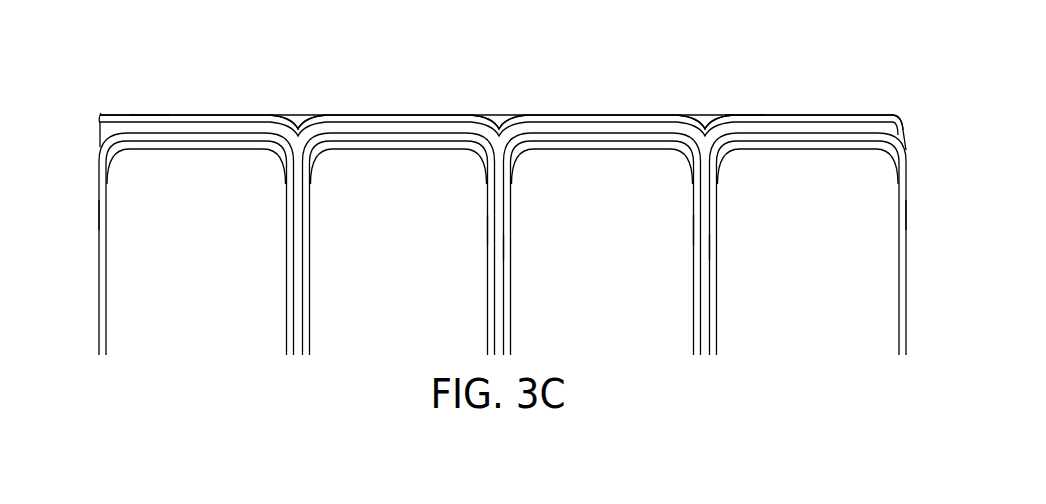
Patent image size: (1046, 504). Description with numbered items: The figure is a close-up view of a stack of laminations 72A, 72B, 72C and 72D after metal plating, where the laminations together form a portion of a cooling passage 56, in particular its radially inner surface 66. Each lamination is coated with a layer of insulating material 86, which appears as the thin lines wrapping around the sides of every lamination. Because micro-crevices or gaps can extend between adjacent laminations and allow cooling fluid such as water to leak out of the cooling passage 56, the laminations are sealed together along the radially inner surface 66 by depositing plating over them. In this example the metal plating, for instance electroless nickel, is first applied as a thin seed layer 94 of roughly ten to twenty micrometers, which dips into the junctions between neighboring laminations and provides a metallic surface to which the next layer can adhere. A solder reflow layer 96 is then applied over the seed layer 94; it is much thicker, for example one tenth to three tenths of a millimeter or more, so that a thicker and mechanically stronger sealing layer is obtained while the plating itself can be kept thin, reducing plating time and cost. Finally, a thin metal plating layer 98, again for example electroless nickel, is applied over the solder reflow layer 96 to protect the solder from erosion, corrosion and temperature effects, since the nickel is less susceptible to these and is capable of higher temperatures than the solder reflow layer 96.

The cooling passage 56 is at (483, 60).
The radially inner surface 66 is at (850, 70).
The lamination 72A is at (176, 252).
The lamination 72B is at (375, 252).
The lamination 72C is at (581, 252).
The lamination 72D is at (786, 252).
The layer of insulating material 86 is at (99, 215).
The seed layer 94 is at (296, 126).
The solder reflow layer 96 is at (175, 128).
The metal plating layer 98 is at (152, 113).